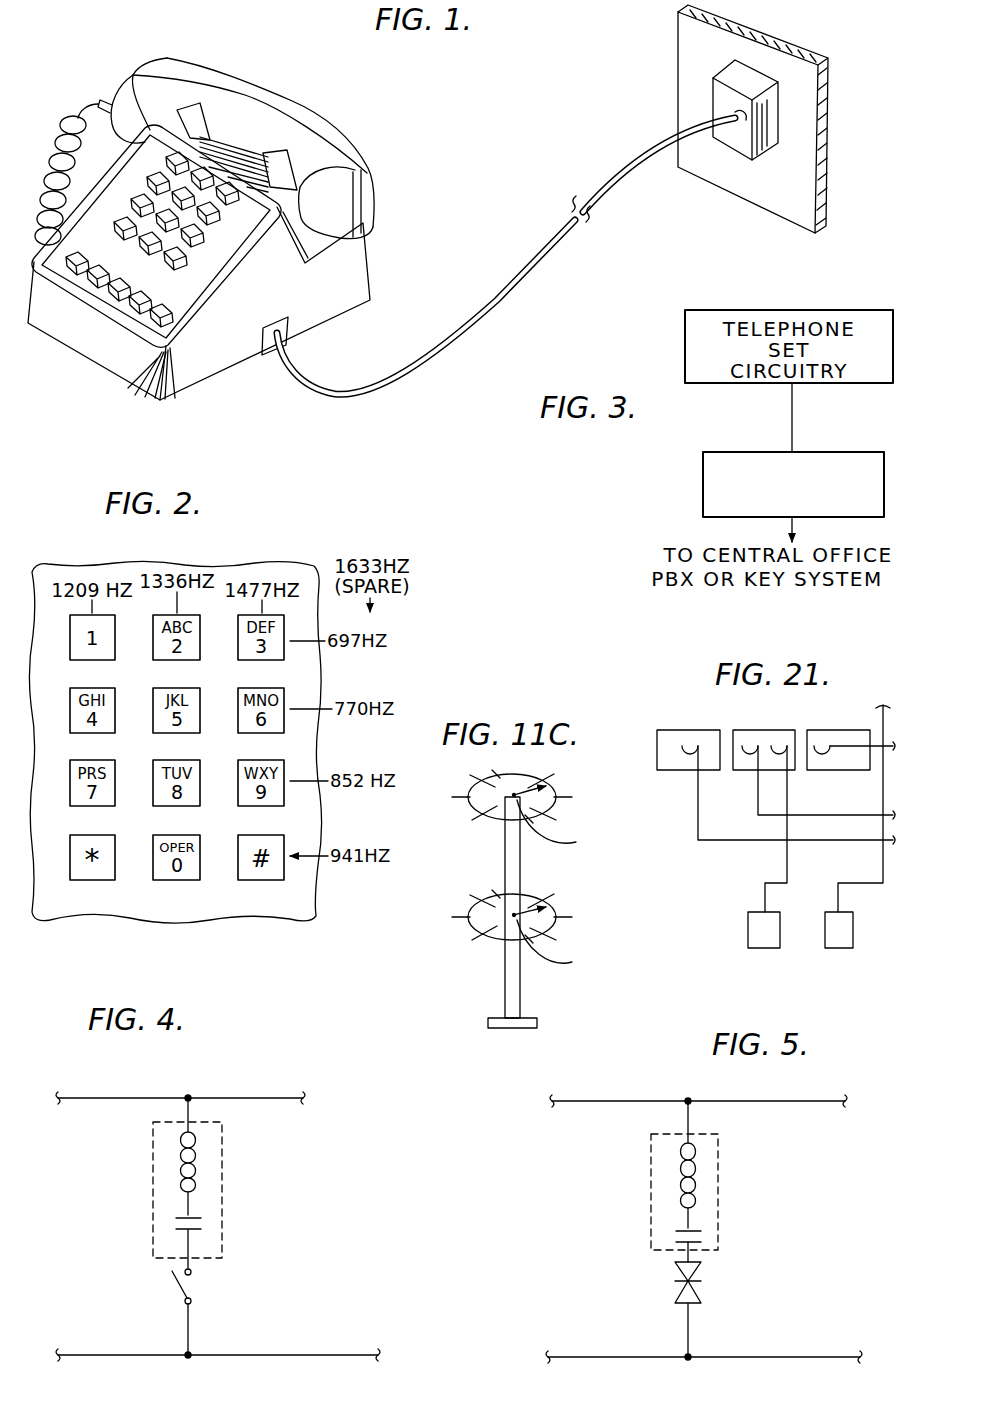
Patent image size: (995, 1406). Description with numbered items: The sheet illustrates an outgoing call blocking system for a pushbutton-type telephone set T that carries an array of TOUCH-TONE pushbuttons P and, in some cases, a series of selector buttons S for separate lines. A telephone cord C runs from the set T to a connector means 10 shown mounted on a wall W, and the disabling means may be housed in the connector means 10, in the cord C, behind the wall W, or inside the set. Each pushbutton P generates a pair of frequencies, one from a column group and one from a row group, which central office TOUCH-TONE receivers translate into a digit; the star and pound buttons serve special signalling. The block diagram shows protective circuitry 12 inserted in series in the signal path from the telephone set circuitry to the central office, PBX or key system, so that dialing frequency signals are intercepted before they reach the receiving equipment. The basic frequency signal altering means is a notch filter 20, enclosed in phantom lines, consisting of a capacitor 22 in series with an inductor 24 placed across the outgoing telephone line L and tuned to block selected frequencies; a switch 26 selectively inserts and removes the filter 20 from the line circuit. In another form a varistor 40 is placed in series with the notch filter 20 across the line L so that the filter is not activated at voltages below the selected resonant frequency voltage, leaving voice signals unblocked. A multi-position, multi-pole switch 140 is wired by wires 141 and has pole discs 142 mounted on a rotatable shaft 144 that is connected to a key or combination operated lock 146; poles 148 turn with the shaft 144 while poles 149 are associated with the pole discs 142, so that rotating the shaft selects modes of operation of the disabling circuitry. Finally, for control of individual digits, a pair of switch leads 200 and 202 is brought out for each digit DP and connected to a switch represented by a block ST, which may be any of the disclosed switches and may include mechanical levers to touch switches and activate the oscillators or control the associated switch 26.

In FIG. 1, the pushbutton-type telephone set T is at (68, 100).
In FIG. 1, the TOUCH-TONE pushbuttons P is at (186, 278).
In FIG. 1, the selector buttons S is at (138, 318).
In FIG. 1, the telephone cord C is at (406, 362).
In FIG. 1, the wall W is at (792, 208).
In FIG. 1, the connector means 10 is at (742, 168).
In FIG. 3, the protective circuitry 12 is at (697, 482).
In FIG. 11C, the multi-position, multi-pole switch 140 is at (466, 862).
In FIG. 11C, the wires 141 is at (564, 881).
In FIG. 11C, the pole discs 142 is at (478, 803).
In FIG. 11C, the shaft 144 is at (518, 995).
In FIG. 11C, the key or combination operated lock 146 is at (490, 1022).
In FIG. 11C, the poles 148 is at (520, 912).
In FIG. 11C, the poles 149 is at (552, 916).
In FIG. 21, the digit DP is at (751, 740).
In FIG. 21, the switch lead 200 is at (758, 782).
In FIG. 21, the switch lead 202 is at (787, 800).
In FIG. 21, the switch block ST is at (775, 940).
In FIG. 4, the outgoing telephone line L is at (130, 1095).
In FIG. 5, the outgoing telephone line L is at (645, 1100).
In FIG. 4, the notch filter 20 is at (236, 1158).
In FIG. 5, the notch filter 20 is at (748, 1183).
In FIG. 4, the capacitor 22 is at (180, 1235).
In FIG. 4, the inductor 24 is at (172, 1178).
In FIG. 4, the switch 26 is at (210, 1290).
In FIG. 5, the varistor 40 is at (666, 1282).